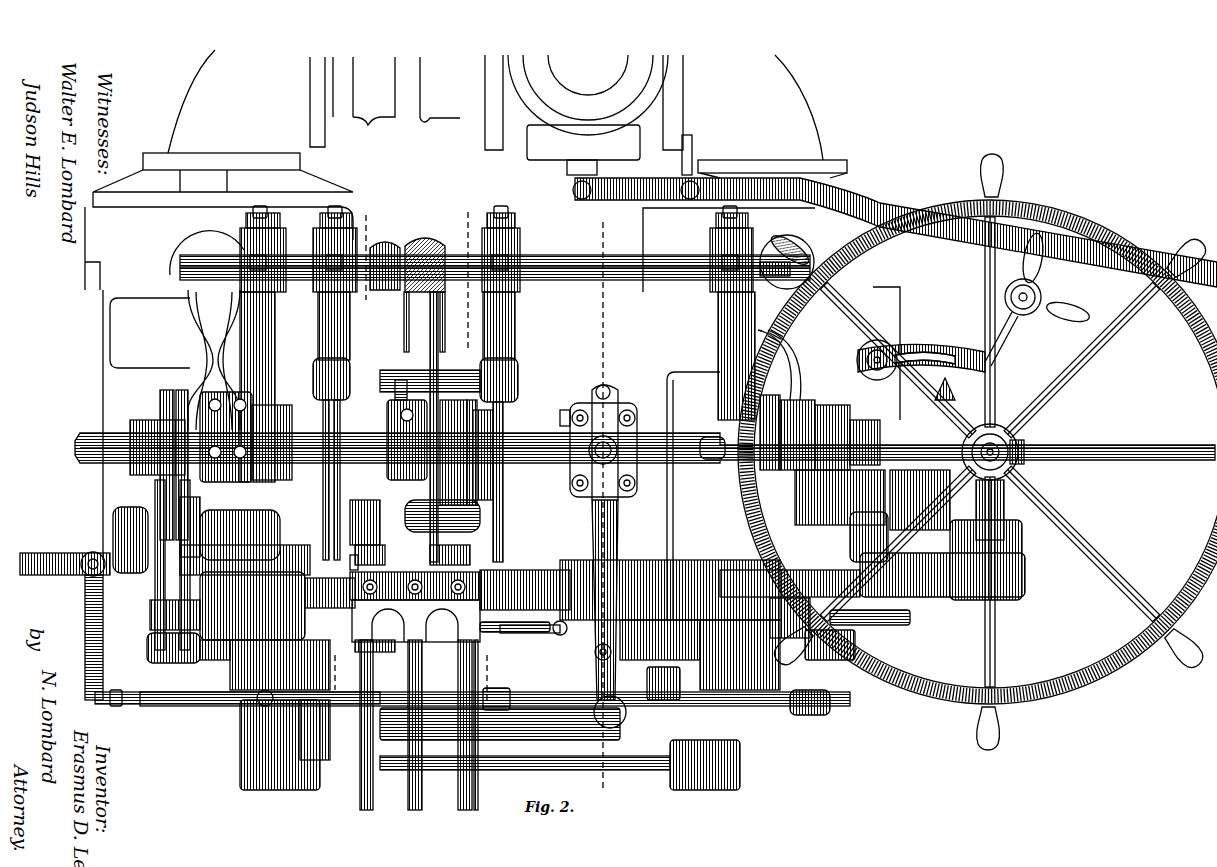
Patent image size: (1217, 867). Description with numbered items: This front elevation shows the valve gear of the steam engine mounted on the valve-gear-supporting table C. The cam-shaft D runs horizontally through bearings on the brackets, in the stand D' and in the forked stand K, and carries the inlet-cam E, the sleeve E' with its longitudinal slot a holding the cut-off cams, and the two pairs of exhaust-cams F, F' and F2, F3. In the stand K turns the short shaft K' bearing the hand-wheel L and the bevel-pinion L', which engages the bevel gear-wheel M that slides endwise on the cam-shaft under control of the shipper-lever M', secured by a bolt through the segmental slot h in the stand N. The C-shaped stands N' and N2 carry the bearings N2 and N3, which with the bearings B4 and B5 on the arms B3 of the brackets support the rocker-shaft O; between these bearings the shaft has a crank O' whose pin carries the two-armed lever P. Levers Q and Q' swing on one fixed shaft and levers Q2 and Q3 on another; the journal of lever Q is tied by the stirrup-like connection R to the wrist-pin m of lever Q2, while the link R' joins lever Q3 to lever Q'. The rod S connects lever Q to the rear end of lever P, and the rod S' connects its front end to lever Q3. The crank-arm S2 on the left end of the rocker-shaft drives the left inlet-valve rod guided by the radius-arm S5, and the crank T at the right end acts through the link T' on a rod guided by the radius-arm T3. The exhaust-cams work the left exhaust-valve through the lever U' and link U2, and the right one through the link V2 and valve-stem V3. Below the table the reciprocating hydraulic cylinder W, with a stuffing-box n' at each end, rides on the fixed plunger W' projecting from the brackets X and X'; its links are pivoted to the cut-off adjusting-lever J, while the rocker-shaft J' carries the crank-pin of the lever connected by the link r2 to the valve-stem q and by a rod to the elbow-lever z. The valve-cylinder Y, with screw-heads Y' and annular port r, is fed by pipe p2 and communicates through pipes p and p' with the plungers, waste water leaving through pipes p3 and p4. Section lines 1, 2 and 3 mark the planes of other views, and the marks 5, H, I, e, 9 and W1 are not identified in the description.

The section line 1 is at (602, 506).
The section line 2 is at (239, 446).
The section line 3 is at (467, 274).
The section line 5 is at (492, 673).
The rocker-shaft O is at (495, 258).
The crank O' is at (385, 253).
The two-armed lever P is at (425, 245).
The bearing B4 is at (258, 225).
The bearing B5 is at (722, 238).
The bracket arm B3 is at (272, 335).
The stand N is at (640, 287).
The C-shaped stand N' is at (331, 426).
The C-shaped stand and bearing N2 is at (499, 427).
The bearing N3 is at (520, 230).
The rod S is at (524, 481).
The rod S' is at (515, 476).
The crank-arm S2 is at (205, 255).
The radius-arm S5 is at (200, 330).
The crank T is at (775, 262).
The link T' is at (787, 254).
The radius-arm T3 is at (790, 348).
The lever Q is at (429, 379).
The shorter lever Q' is at (429, 381).
The shorter lever Q2 is at (415, 532).
The lever Q3 is at (450, 551).
The forked stand K is at (1002, 510).
The short shaft K' is at (645, 452).
The hand-wheel L is at (977, 452).
The bevel-pinion L' is at (1028, 458).
The exhaust-cam F is at (157, 465).
The exhaust-cam F' is at (172, 456).
The exhaust-cam F2 is at (797, 427).
The exhaust-cam F3 is at (835, 412).
The stirrup-like connection R is at (255, 437).
The stirrup-like link R' is at (504, 449).
The cam-shaft D is at (530, 492).
The stand D' is at (407, 440).
The inlet-cam E is at (553, 452).
The sleeve E' is at (464, 452).
The bracket H is at (632, 405).
The link I is at (603, 442).
The cut-off adjusting-lever J is at (614, 600).
The rocker-shaft J' is at (619, 649).
The longitudinal slot a is at (680, 445).
The bolt e is at (605, 413).
The wrist-pin m is at (357, 560).
The segmental slot h is at (932, 357).
The roller 9 is at (874, 365).
The bevel gear-wheel M is at (933, 454).
The shipper-lever M' is at (991, 299).
The lever U' is at (172, 565).
The link U2 is at (175, 660).
The elbow-lever z is at (65, 617).
The valve-gear-supporting table C is at (1030, 568).
The valve-cylinder Y is at (415, 607).
The screw-heads Y' is at (624, 541).
The bracket X is at (630, 625).
The bracket X' is at (265, 665).
The reciprocating hydraulic cylinder W is at (495, 708).
The fixed plunger W' is at (665, 683).
The cylinder W1 is at (286, 745).
The stuffing-box n' is at (540, 764).
The pipe p is at (595, 725).
The pipe p' is at (360, 655).
The supply pipe p2 is at (422, 778).
The waste pipe p3 is at (472, 776).
The waste pipe p4 is at (402, 725).
The valve-stem q is at (530, 639).
The annular port r is at (515, 657).
The link r2 is at (567, 633).
The link V2 is at (812, 639).
The valve-stem V3 is at (842, 614).